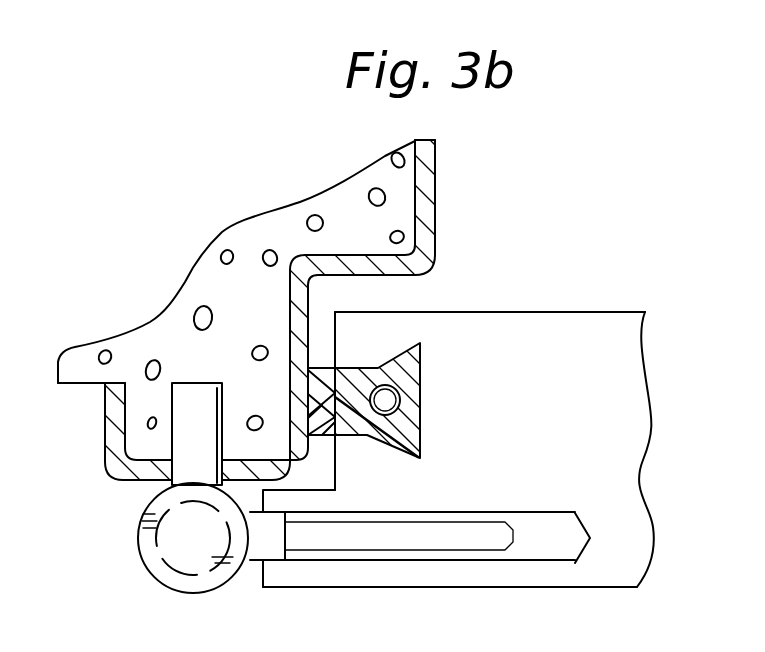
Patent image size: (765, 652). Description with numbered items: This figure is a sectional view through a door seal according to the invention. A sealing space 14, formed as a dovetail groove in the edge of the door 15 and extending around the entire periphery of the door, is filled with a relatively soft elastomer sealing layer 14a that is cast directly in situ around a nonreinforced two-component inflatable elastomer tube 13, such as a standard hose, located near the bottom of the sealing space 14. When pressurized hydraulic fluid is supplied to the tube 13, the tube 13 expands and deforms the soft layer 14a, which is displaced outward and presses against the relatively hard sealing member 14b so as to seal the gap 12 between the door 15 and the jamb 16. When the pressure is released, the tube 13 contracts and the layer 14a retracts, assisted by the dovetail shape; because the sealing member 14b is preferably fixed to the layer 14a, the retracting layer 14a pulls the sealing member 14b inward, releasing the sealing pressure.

The gap 12 is at (322, 316).
The inflatable elastomer tube 13 is at (427, 365).
The sealing space 14 is at (365, 326).
The sealing layer 14a is at (370, 437).
The sealing member 14b is at (320, 437).
The door 15 is at (543, 312).
The jamb 16 is at (437, 160).